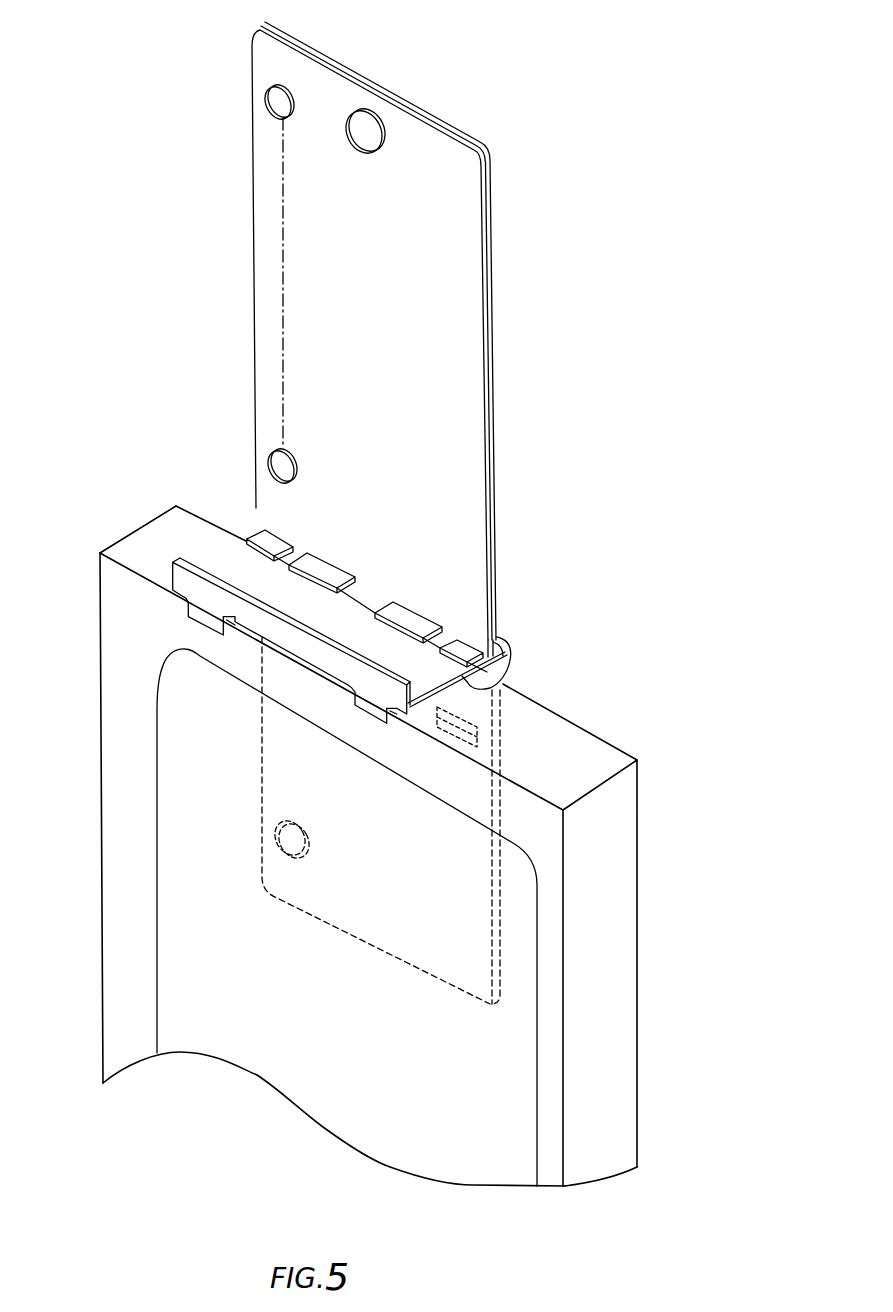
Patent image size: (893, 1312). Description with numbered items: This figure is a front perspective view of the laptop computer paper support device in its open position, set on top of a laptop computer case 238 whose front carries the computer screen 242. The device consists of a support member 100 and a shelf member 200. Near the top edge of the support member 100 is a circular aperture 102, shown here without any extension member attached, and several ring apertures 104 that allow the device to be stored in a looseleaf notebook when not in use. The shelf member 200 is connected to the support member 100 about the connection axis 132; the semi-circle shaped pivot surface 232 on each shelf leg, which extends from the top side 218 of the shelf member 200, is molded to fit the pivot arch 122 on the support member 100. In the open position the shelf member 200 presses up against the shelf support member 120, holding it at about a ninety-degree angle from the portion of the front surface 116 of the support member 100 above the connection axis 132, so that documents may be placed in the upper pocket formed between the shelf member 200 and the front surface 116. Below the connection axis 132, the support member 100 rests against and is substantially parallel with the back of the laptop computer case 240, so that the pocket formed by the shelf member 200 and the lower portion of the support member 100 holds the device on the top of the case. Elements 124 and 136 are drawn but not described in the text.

The support member 100 is at (117, 274).
The circular aperture 102 is at (393, 133).
The ring apertures 104 is at (267, 93).
The front surface 116 is at (331, 387).
The shelf support member 120 is at (275, 530).
The pivot arch 122 is at (501, 646).
The card edge 124 is at (501, 637).
The connection axis 132 is at (364, 604).
The housing side wall 136 is at (617, 863).
The shelf member 200 is at (344, 625).
The top side 218 is at (372, 600).
The pivot surface 232 is at (492, 668).
The laptop computer case 238 is at (573, 989).
The back of the laptop computer case 240 is at (630, 990).
The computer screen 242 is at (274, 1010).